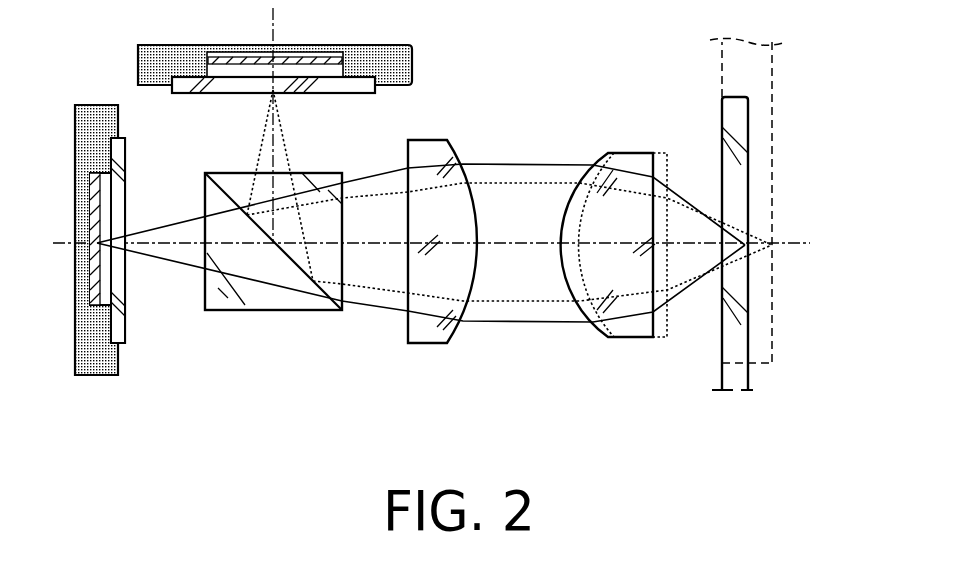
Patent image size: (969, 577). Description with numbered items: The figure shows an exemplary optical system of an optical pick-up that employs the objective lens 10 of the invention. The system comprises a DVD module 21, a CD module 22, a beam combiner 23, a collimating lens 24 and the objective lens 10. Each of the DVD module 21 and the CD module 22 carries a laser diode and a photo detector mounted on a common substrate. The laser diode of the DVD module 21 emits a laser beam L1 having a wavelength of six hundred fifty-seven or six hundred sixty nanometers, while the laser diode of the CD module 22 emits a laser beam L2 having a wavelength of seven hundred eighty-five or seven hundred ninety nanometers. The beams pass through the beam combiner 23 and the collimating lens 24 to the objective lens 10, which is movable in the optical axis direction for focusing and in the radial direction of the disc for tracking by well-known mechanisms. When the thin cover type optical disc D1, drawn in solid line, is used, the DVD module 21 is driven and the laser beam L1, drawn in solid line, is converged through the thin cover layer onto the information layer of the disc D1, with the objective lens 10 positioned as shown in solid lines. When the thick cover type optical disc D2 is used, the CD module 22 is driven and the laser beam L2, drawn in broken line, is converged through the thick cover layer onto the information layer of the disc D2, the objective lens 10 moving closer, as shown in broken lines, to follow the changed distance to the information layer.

The DVD module 21 is at (97, 365).
The CD module 22 is at (383, 47).
The beam combiner 23 is at (272, 310).
The collimating lens 24 is at (430, 333).
The objective lens 10 is at (638, 332).
The laser beam L1 is at (523, 163).
The laser beam L2 is at (540, 303).
The thin cover type optical disc D1 is at (738, 350).
The thick cover type optical disc D2 is at (773, 190).